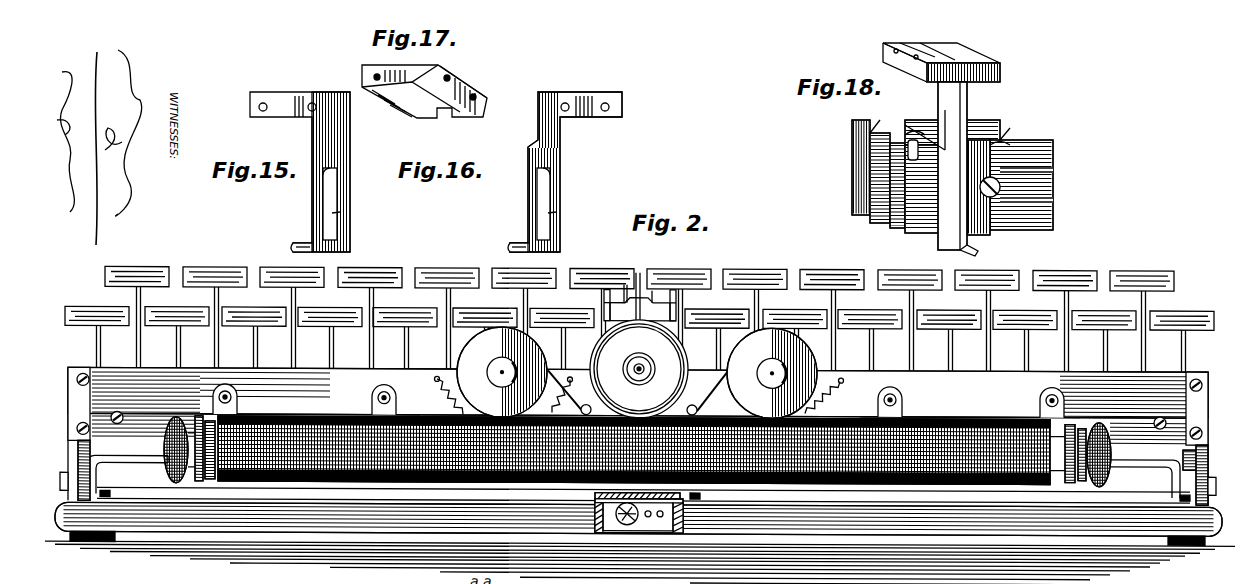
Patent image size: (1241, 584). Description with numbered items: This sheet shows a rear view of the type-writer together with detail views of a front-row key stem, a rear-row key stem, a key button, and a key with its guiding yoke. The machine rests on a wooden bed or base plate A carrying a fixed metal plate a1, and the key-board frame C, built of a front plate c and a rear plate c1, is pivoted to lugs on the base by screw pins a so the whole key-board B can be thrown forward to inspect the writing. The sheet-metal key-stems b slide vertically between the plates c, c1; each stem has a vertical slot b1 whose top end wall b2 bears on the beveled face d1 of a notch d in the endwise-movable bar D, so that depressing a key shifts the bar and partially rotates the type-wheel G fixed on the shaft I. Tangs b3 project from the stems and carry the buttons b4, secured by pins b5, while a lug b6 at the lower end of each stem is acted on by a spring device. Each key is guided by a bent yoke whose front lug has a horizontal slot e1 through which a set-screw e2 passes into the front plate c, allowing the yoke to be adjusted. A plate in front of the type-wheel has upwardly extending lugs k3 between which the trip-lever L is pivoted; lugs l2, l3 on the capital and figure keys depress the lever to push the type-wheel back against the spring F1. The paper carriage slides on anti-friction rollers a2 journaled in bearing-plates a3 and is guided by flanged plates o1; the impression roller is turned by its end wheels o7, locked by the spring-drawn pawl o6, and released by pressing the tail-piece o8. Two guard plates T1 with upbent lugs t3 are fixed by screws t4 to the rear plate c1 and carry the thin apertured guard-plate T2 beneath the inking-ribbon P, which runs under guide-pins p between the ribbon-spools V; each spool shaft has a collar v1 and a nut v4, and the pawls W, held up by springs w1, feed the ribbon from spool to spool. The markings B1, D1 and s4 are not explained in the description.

In FIG. 2, the bed or base plate A is at (238, 520).
In FIG. 18, the keys of the key-board B is at (957, 145).
In FIG. 2, the keys of the key-board B is at (639, 286).
In FIG. 2, the key lever B1 is at (113, 569).
In FIG. 2, the key-board frame C is at (1035, 410).
In FIG. 18, the notched bar D is at (880, 222).
In FIG. 2, the end plate of frame D1 is at (68, 415).
In FIG. 2, the spring F1 is at (132, 456).
In FIG. 2, the type-wheel G is at (639, 369).
In FIG. 2, the type-wheel shaft I is at (652, 368).
In FIG. 2, the trip-lever L is at (640, 305).
In FIG. 2, the inking-ribbon P is at (692, 395).
In FIG. 2, the guard plates T1 is at (318, 413).
In FIG. 2, the guard-plate T2 is at (700, 420).
In FIG. 2, the ribbon-spools V is at (637, 373).
In FIG. 2, the pawls W is at (634, 450).
In FIG. 2, the screw pins a is at (60, 484).
In FIG. 2, the metal plate a1 is at (58, 510).
In FIG. 2, the anti-friction rollers a2 is at (630, 530).
In FIG. 2, the bearing-plates a3 is at (641, 517).
In FIG. 15, the key-stems b is at (300, 172).
In FIG. 16, the key-stems b is at (566, 172).
In FIG. 18, the key-stems b is at (933, 254).
In FIG. 2, the key-stems b is at (1111, 345).
In FIG. 15, the vertical slot b1 is at (332, 213).
In FIG. 16, the vertical slot b1 is at (548, 213).
In FIG. 15, the top end wall of key-slot b2 is at (340, 180).
In FIG. 16, the top end wall of key-slot b2 is at (556, 180).
In FIG. 15, the tang b3 is at (297, 100).
In FIG. 16, the tang b3 is at (590, 100).
In FIG. 17, the key button b4 is at (455, 84).
In FIG. 18, the key button b4 is at (985, 66).
In FIG. 17, the pins b5 is at (478, 97).
In FIG. 18, the pins b5 is at (916, 60).
In FIG. 15, the forwardly-projecting lug b6 is at (296, 248).
In FIG. 16, the forwardly-projecting lug b6 is at (512, 248).
In FIG. 18, the forwardly-projecting lug b6 is at (978, 253).
In FIG. 18, the front plate c is at (961, 176).
In FIG. 18, the rear plate c1 is at (858, 125).
In FIG. 18, the notches of bar d is at (908, 132).
In FIG. 18, the beveled face of notch d1 is at (914, 138).
In FIG. 18, the horizontal slot e1 is at (975, 205).
In FIG. 18, the set-screw e2 is at (996, 198).
In FIG. 2, the upwardly-extending lugs k3 is at (644, 286).
In FIG. 2, the capital-key lug l2 is at (624, 285).
In FIG. 2, the figure-key lug l3 is at (655, 295).
In FIG. 2, the flanged guide-plates o1 is at (1052, 498).
In FIG. 2, the spring-drawn pawl o6 is at (198, 480).
In FIG. 2, the end wheels of impression-roller o7 is at (174, 420).
In FIG. 2, the tail-piece of pawl o8 is at (194, 417).
In FIG. 2, the guide-pins p is at (637, 401).
In FIG. 2, the spring s4 is at (559, 395).
In FIG. 2, the upbent lugs t3 is at (638, 386).
In FIG. 2, the screws t4 is at (236, 386).
In FIG. 2, the collar v1 is at (510, 375).
In FIG. 2, the nut v4 is at (758, 375).
In FIG. 2, the pawl springs w1 is at (440, 400).